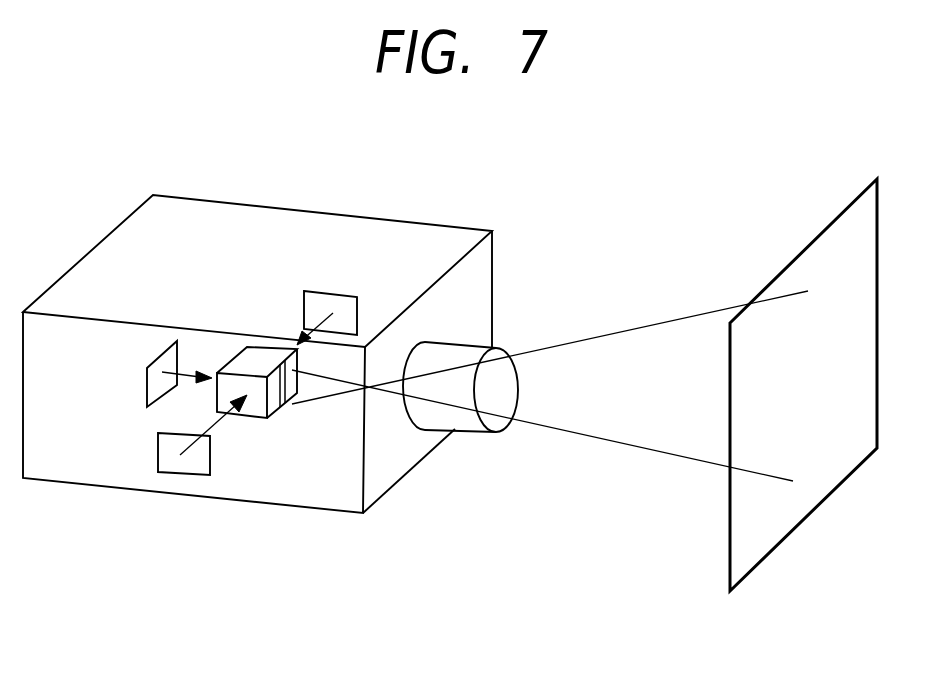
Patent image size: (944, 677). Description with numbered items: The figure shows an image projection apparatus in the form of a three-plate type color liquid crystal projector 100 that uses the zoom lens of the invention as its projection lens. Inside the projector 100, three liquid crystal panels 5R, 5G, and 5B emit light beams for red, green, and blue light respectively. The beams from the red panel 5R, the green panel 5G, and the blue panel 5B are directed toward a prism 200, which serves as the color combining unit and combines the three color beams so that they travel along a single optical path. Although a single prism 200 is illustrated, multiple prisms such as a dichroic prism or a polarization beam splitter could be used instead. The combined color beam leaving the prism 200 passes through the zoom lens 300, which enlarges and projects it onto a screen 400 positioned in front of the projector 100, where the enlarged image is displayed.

The color liquid crystal projector 100 is at (225, 201).
The panel for B (blue light) 5B is at (336, 291).
The panel for G (green light) 5G is at (147, 379).
The panel for R (red light) 5R is at (158, 451).
The prism 200 is at (255, 420).
The zoom lens 300 is at (465, 432).
The screen 400 is at (808, 246).